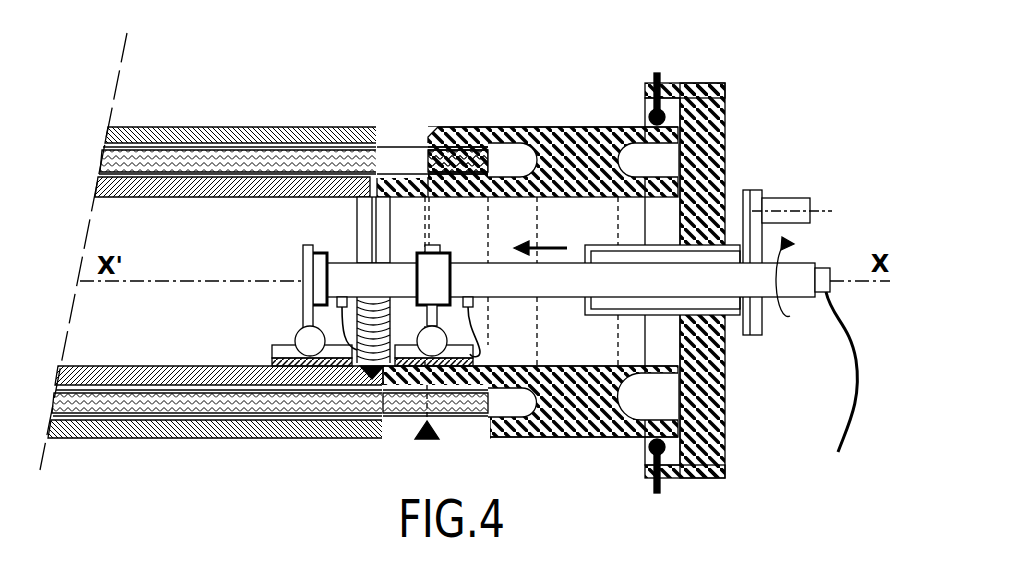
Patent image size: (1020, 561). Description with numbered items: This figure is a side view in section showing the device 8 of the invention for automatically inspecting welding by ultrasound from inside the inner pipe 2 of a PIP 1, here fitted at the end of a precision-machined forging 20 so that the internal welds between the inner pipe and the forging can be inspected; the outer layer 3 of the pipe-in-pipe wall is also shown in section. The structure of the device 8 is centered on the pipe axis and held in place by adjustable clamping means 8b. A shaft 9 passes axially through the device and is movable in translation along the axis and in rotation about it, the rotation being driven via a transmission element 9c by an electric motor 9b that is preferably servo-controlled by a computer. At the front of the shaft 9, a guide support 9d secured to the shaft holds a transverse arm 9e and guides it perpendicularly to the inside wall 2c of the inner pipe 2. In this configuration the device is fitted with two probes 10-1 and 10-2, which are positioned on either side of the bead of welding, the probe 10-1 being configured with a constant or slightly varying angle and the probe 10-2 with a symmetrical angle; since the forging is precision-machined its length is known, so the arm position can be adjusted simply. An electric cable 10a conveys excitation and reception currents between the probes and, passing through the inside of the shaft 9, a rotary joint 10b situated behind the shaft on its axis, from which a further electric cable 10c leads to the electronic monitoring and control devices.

The PIP 1 is at (265, 242).
The inner pipe 2 is at (228, 198).
The inside wall 2c is at (122, 367).
The upper wall layer 3 is at (300, 137).
The forging 20 is at (557, 112).
The device 8 is at (737, 105).
The adjustable clamping means 8b is at (657, 73).
The shaft 9 is at (468, 272).
The electric motor 9b is at (793, 212).
The transmission element 9c is at (748, 190).
The guide support 9d is at (320, 257).
The transverse arm 9e is at (303, 320).
The electric cable 10a is at (478, 352).
The rotary joint 10b is at (830, 268).
The electric cable 10c is at (848, 392).
The probe 10-1 is at (296, 341).
The probe 10-2 is at (480, 350).